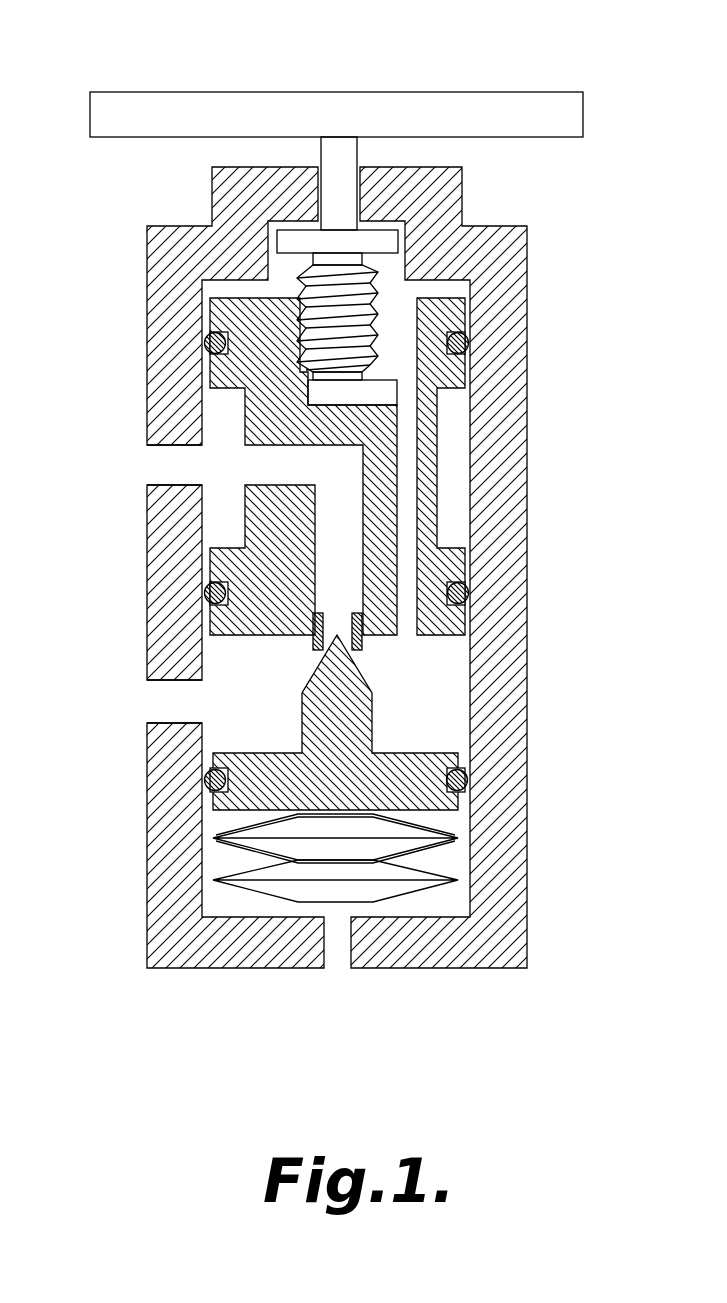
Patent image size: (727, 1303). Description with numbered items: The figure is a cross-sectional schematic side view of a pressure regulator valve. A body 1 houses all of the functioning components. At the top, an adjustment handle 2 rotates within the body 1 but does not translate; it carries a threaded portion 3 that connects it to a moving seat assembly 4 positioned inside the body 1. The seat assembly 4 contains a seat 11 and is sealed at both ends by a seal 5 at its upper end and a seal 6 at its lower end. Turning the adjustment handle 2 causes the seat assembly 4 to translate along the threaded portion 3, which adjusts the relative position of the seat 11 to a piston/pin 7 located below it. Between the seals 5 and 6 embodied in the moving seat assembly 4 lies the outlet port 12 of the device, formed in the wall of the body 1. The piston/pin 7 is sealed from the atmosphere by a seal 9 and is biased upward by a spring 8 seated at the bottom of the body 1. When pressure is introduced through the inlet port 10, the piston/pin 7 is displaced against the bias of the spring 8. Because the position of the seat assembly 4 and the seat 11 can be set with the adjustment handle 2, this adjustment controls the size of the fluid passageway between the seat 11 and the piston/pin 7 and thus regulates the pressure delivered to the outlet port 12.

The body 1 is at (158, 323).
The adjustment handle 2 is at (163, 104).
The threaded portion 3 is at (325, 272).
The moving seat assembly 4 is at (447, 316).
The seal 5 is at (467, 337).
The seal 6 is at (460, 588).
The piston/pin 7 is at (348, 725).
The spring 8 is at (415, 852).
The seal 9 is at (210, 777).
The inlet port 10 is at (170, 708).
The seat 11 is at (310, 642).
The outlet port 12 is at (158, 470).